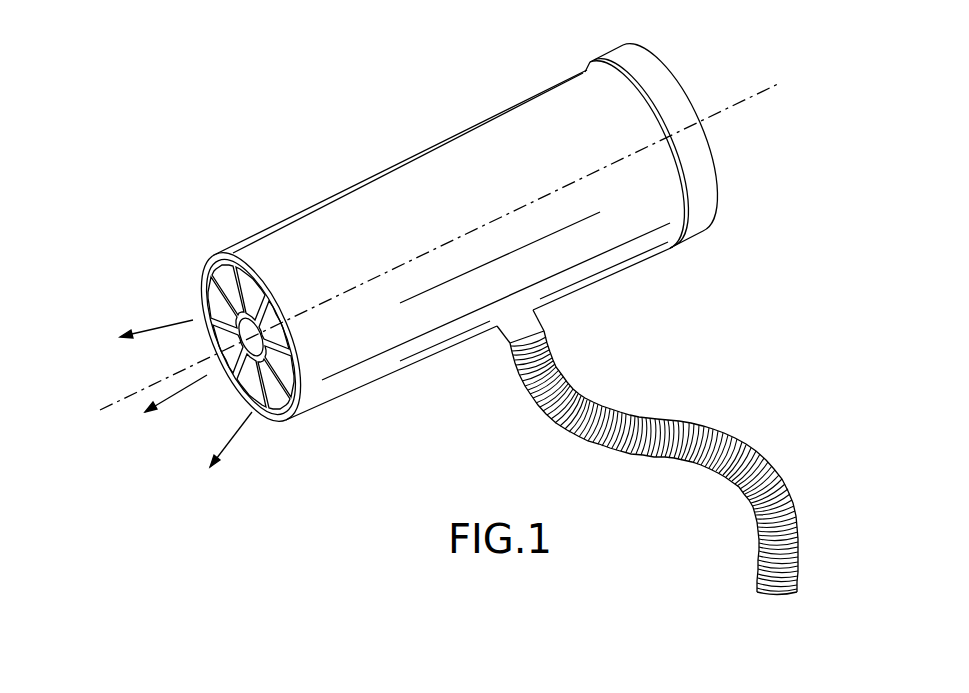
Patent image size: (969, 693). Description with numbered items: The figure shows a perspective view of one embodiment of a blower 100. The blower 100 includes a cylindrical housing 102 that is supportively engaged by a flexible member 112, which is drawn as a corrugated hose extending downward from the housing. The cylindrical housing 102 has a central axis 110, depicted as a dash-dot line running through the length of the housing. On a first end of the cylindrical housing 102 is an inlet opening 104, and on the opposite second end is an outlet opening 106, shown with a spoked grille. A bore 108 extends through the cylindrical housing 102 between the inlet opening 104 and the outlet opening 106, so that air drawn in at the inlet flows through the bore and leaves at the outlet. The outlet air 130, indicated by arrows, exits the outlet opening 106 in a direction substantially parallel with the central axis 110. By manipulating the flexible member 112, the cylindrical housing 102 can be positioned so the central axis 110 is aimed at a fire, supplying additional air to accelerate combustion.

The blower 100 is at (459, 311).
The cylindrical housing 102 is at (321, 214).
The inlet opening 104 is at (670, 81).
The outlet opening 106 is at (233, 357).
The bore 108 is at (211, 274).
The central axis 110 is at (733, 102).
The flexible member 112 is at (640, 411).
The outlet air 130 is at (155, 331).